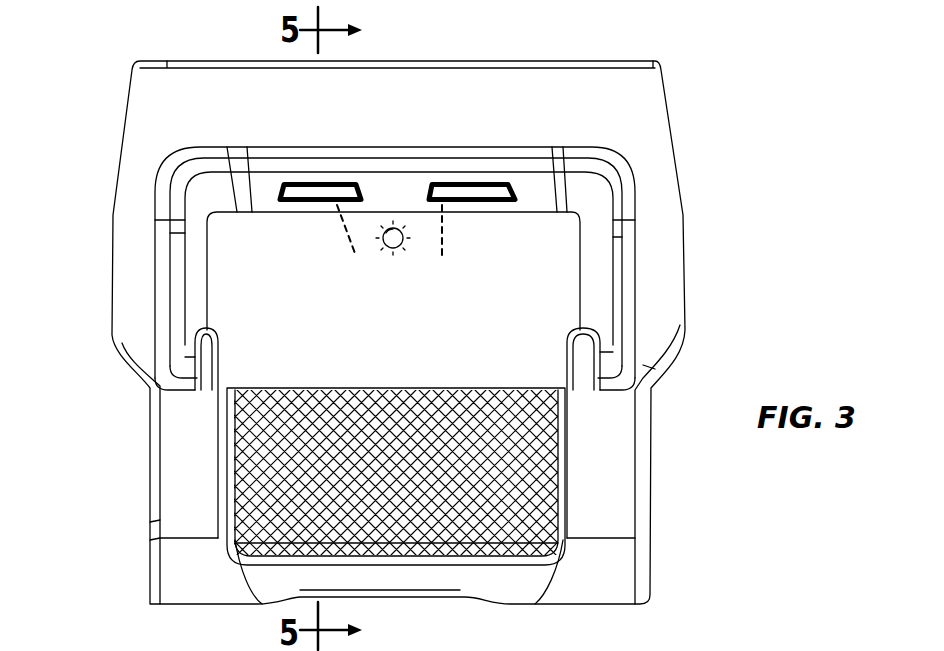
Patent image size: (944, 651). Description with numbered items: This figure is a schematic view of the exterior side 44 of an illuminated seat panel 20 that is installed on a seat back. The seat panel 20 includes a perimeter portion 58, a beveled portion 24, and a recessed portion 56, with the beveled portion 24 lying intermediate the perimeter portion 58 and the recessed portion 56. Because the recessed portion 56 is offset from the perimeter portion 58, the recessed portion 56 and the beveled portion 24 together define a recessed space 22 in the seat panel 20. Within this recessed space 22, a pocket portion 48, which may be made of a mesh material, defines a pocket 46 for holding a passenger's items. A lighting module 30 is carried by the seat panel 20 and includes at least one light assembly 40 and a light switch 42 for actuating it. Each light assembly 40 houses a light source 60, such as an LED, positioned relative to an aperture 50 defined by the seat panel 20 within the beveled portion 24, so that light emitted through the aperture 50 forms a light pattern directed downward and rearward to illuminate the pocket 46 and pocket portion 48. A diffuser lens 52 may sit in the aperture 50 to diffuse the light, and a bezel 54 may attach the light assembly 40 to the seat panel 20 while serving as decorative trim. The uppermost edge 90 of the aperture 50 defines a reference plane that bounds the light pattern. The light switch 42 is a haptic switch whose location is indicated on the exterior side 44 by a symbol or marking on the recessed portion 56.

The seat panel 20 is at (704, 145).
The recessed space 22 is at (268, 310).
The beveled portion 24 is at (268, 182).
The lighting module 30 is at (452, 113).
The light assembly 40 is at (288, 170).
The light switch 42 is at (381, 264).
The exterior side of seat panel 44 is at (148, 90).
The pocket 46 is at (474, 362).
The pocket portion 48 is at (260, 388).
The aperture 50 is at (293, 195).
The diffuser lens 52 is at (335, 190).
The bezel 54 is at (362, 192).
The recessed portion 56 is at (548, 237).
The perimeter portion 58 is at (596, 90).
The light source 60 is at (347, 258).
The uppermost edge of aperture 90 is at (492, 190).